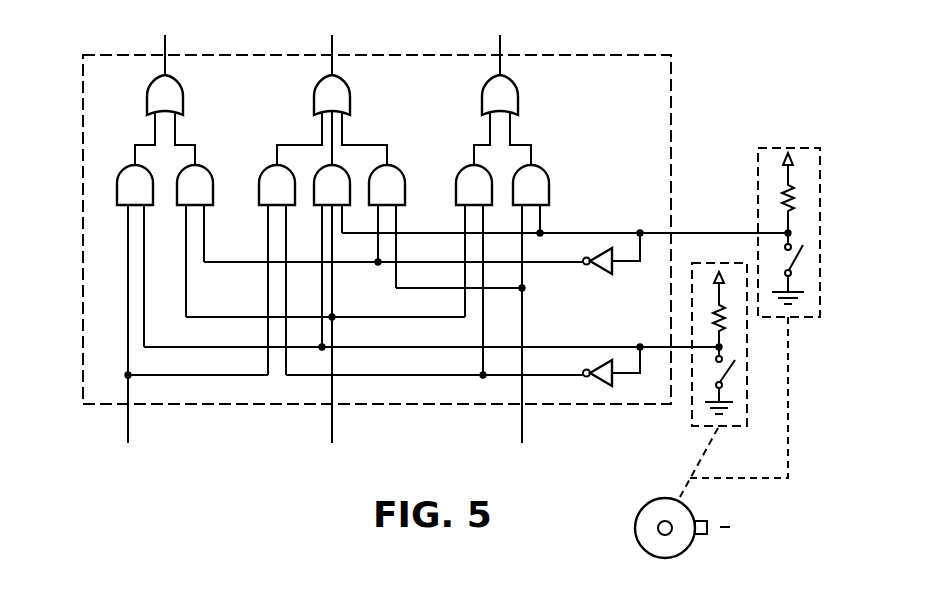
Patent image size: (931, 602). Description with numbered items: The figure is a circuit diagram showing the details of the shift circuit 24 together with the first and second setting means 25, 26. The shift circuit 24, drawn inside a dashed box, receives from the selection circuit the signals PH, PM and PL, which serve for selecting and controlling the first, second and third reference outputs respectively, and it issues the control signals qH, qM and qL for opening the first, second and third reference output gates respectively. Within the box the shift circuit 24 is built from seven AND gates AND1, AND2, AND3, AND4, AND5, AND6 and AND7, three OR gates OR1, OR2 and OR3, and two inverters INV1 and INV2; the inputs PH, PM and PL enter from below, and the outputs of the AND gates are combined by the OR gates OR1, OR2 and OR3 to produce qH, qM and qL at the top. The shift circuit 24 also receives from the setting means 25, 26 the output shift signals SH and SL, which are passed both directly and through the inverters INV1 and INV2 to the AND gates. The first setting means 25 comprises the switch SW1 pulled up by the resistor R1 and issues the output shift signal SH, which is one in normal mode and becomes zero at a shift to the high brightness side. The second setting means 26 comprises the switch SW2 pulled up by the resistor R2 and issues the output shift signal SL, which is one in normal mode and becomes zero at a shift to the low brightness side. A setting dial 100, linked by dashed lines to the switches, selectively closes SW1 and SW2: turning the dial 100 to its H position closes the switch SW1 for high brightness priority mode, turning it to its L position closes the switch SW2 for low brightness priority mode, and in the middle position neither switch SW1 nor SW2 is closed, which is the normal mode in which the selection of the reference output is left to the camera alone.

The shift circuit 24 is at (615, 53).
The first setting means 25 is at (800, 147).
The second setting means 26 is at (726, 264).
The setting dial 100 is at (642, 514).
The OR gate OR1 is at (181, 83).
The OR gate OR2 is at (345, 84).
The OR gate OR3 is at (514, 83).
The AND gate AND1 is at (125, 168).
The AND gate AND2 is at (224, 160).
The AND gate AND3 is at (259, 184).
The AND gate AND4 is at (315, 170).
The AND gate AND5 is at (404, 175).
The AND gate AND6 is at (456, 188).
The AND gate AND7 is at (567, 157).
The inverter INV1 is at (598, 273).
The inverter INV2 is at (597, 384).
The resistor R1 is at (786, 197).
The resistor R2 is at (725, 318).
The switch SW1 is at (795, 270).
The switch SW2 is at (728, 378).
The output shift signal SH is at (640, 232).
The output shift signal SL is at (641, 345).
The selection signal PH is at (192, 422).
The selection signal PM is at (325, 393).
The selection signal PL is at (464, 379).
The control signal qH is at (163, 41).
The control signal qM is at (330, 41).
The control signal qL is at (500, 41).